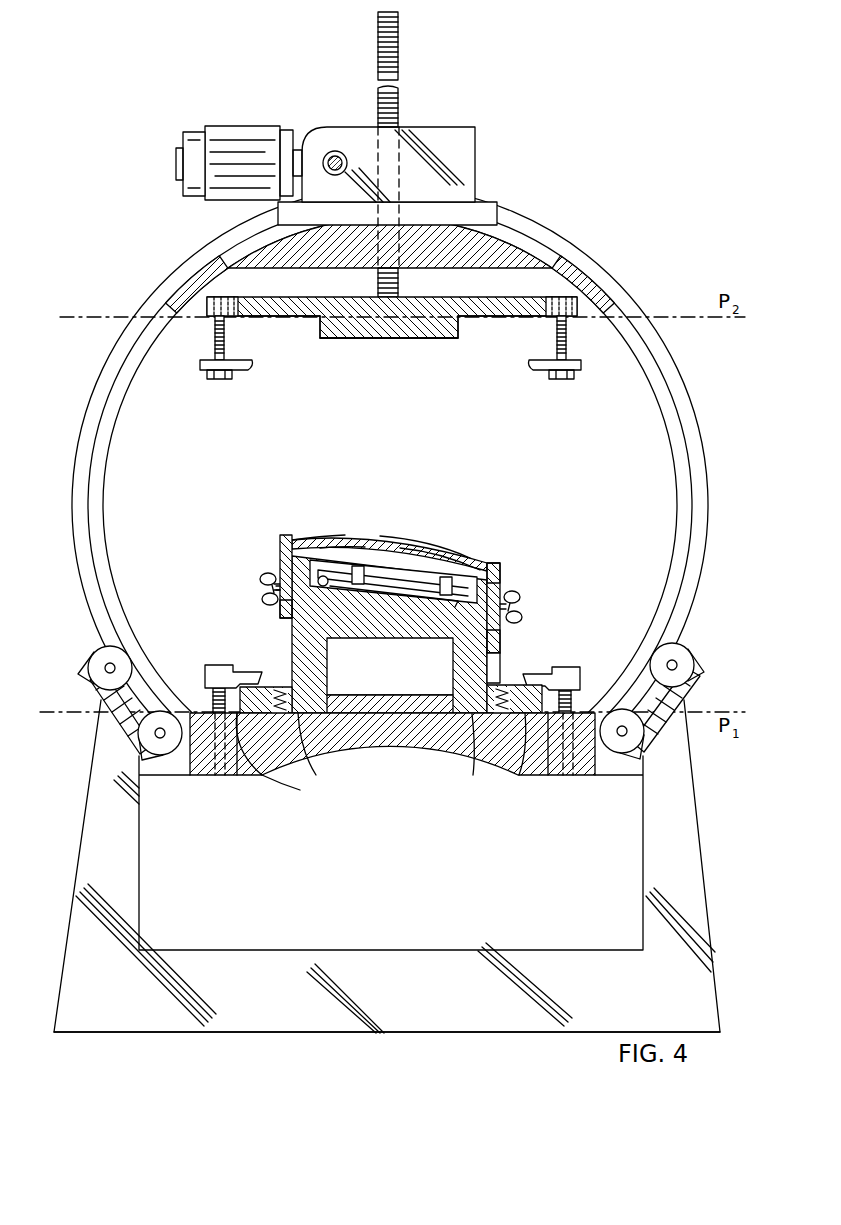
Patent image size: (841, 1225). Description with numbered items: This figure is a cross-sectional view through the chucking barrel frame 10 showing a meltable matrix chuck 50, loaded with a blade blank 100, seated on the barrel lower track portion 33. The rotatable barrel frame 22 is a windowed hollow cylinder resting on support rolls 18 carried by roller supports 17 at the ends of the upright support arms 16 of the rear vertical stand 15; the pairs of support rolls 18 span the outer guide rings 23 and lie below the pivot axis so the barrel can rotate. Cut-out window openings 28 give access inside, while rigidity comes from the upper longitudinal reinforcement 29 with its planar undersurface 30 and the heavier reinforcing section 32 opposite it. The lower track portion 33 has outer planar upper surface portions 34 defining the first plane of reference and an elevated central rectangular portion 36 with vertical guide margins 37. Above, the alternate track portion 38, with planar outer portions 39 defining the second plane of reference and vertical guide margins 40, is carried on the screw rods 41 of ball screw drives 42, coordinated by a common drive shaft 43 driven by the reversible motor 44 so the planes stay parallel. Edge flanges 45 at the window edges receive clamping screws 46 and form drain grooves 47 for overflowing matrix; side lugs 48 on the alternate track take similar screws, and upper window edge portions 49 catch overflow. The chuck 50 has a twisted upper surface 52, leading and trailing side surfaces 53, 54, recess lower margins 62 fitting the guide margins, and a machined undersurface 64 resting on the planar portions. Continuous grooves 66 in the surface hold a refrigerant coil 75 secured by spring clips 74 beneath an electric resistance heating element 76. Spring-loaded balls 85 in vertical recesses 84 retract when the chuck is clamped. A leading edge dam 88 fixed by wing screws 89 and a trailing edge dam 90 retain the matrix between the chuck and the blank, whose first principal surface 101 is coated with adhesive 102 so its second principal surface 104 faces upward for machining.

The chucking barrel frame 10 is at (160, 247).
The rear vertical stand 15 is at (435, 1034).
The upright support arm 16 is at (101, 752).
The roller support 17 is at (89, 689).
The support roll 18 is at (90, 658).
The rotatable barrel frame 22 is at (137, 435).
The outer guide ring 23 is at (583, 262).
The cut-out window opening 28 is at (102, 392).
The upper longitudinal reinforcement 29 is at (540, 222).
The undersurface 30 is at (562, 250).
The reinforcing section 32 is at (418, 806).
The barrel lower track portion 33 is at (364, 681).
The outer horizontal planar upper surface portion 34 is at (262, 777).
The elevated central rectangular portion 36 is at (375, 697).
The vertical guide margin 37 is at (315, 780).
The alternate track portion 38 is at (438, 340).
The planar outer portion 39 is at (322, 338).
The vertical guide margin 40 is at (284, 322).
The screw rod 41 is at (399, 42).
The ball screw drive 42 is at (477, 147).
The common drive shaft 43 is at (333, 152).
The reversible motor 44 is at (232, 126).
The edge flange 45 is at (196, 778).
The clamping screw 46 is at (212, 348).
The longitudinal drain groove 47 is at (228, 787).
The side lug 48 is at (206, 307).
The upper window edge portion 49 is at (180, 292).
The meltable matrix chuck 50 is at (524, 645).
The chuck upper surface 52 is at (436, 562).
The leading side surface 53 is at (284, 618).
The trailing side surface 54 is at (512, 655).
The lower margin 62 is at (342, 690).
The undersurface 64 is at (292, 782).
The continuous groove 66 is at (284, 578).
The spring clip 74 is at (480, 556).
The refrigerant coil 75 is at (501, 590).
The electric resistance heating element 76 is at (366, 562).
The vertical recess 84 is at (283, 688).
The spring-loaded ball 85 is at (277, 697).
The leading edge dam 88 is at (282, 540).
The wing screw 89 is at (266, 586).
The trailing edge dam 90 is at (501, 582).
The blade blank 100 is at (420, 542).
The first principal surface 101 is at (330, 540).
The adhesive 102 is at (358, 546).
The second principal surface 104 is at (450, 575).